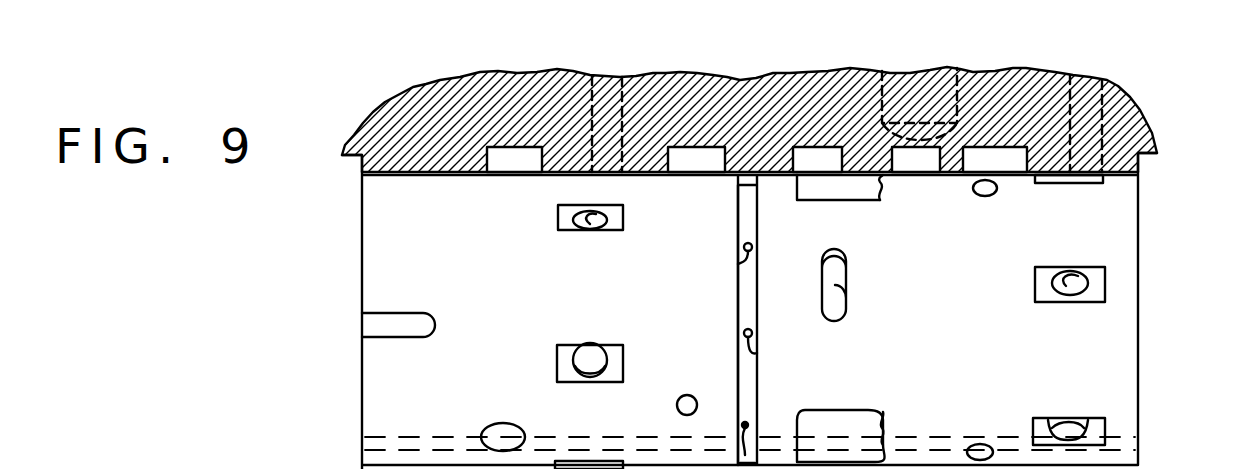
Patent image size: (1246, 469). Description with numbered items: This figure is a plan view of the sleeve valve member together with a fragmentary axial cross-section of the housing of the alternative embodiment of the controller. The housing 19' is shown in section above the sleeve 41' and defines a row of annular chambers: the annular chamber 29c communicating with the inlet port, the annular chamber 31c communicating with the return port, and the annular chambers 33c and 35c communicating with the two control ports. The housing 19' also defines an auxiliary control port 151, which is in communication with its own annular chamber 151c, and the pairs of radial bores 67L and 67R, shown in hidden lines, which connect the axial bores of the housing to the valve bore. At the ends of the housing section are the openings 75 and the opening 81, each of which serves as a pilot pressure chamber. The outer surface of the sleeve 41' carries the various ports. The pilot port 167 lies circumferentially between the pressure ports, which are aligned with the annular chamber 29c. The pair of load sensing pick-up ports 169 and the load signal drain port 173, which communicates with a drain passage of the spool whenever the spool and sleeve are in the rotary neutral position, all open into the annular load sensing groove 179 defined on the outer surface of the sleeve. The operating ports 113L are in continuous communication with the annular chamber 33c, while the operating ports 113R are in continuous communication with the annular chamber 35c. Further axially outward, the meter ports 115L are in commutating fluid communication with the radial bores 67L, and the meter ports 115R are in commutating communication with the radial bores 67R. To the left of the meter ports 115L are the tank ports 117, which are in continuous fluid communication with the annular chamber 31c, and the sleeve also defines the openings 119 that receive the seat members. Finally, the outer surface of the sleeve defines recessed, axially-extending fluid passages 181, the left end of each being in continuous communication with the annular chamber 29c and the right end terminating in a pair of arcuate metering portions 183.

The housing 19' is at (744, 112).
The annular chamber 31c is at (510, 157).
The annular chamber 33c is at (693, 157).
The annular chamber 29c is at (812, 157).
The annular chamber 151c is at (888, 158).
The annular chamber 35c is at (998, 160).
The radial bores 67L is at (609, 110).
The radial bores 67R is at (1085, 110).
The auxiliary control port 151 is at (928, 105).
The openings 75 is at (352, 158).
The opening 81 is at (1142, 162).
The sleeve 41' is at (706, 320).
The openings 119 is at (398, 325).
The meter ports 115L is at (590, 230).
The tank ports 117 is at (500, 434).
The operating ports 113L is at (686, 398).
The load sensing pick-up ports 169 is at (738, 268).
The annular load sensing groove 179 is at (738, 305).
The load signal drain port 173 is at (744, 430).
The fluid passages 181 is at (842, 186).
The arcuate metering portions 183 is at (883, 202).
The operating ports 113R is at (985, 194).
The pilot port 167 is at (846, 287).
The meter ports 115R is at (1068, 302).